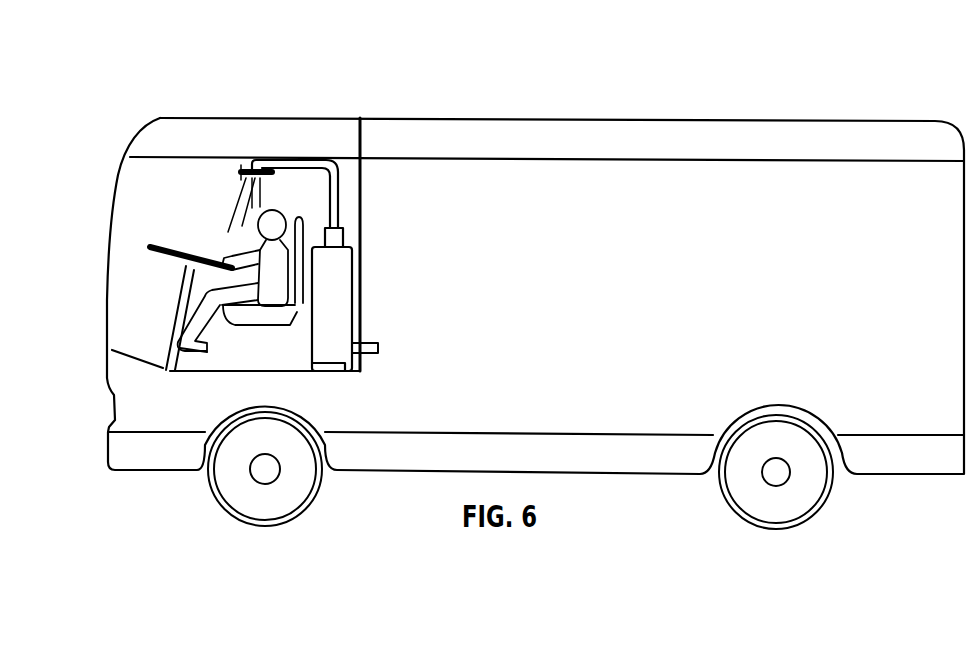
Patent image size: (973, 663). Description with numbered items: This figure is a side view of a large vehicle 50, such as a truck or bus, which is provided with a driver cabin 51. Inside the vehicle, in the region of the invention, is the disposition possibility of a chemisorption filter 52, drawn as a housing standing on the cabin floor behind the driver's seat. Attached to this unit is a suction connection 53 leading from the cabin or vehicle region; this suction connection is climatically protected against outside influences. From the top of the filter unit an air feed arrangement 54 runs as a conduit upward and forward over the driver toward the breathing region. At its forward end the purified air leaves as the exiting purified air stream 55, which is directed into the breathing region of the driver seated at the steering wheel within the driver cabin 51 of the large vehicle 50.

The large vehicle 50 is at (612, 287).
The driver cabin 51 is at (185, 228).
The chemisorption filter disposition 52 is at (330, 277).
The suction connection 53 is at (377, 348).
The air feed arrangement 54 is at (334, 183).
The exiting purified air stream 55 is at (243, 170).